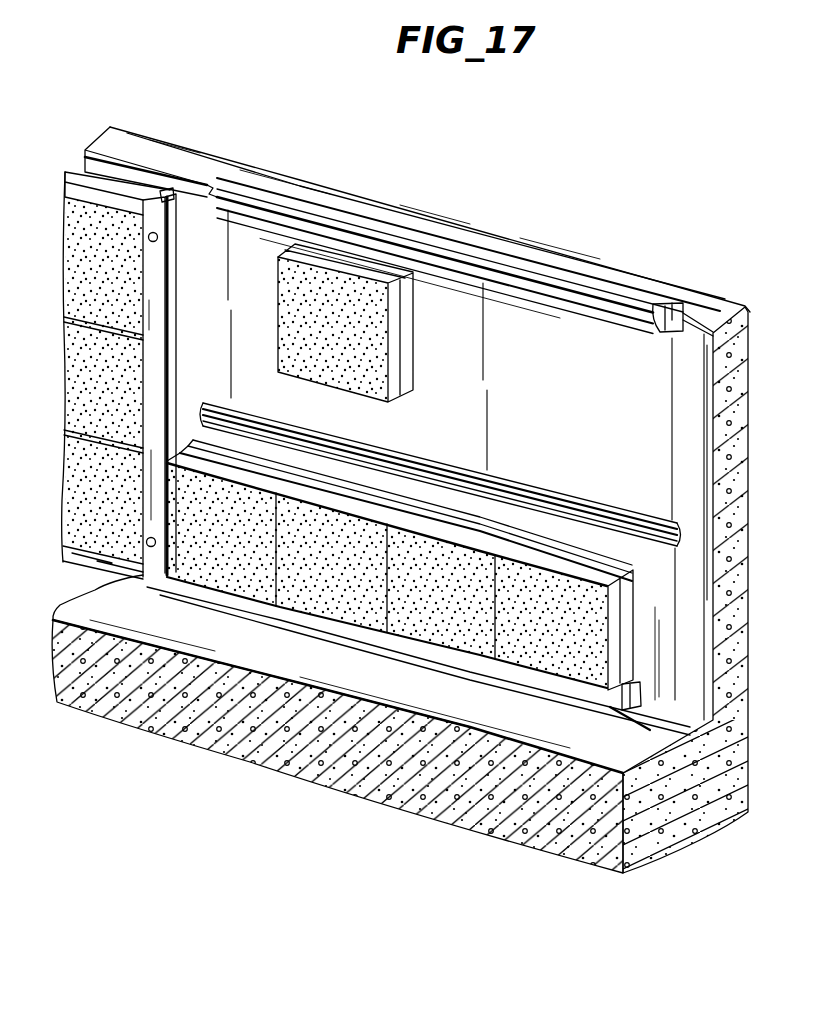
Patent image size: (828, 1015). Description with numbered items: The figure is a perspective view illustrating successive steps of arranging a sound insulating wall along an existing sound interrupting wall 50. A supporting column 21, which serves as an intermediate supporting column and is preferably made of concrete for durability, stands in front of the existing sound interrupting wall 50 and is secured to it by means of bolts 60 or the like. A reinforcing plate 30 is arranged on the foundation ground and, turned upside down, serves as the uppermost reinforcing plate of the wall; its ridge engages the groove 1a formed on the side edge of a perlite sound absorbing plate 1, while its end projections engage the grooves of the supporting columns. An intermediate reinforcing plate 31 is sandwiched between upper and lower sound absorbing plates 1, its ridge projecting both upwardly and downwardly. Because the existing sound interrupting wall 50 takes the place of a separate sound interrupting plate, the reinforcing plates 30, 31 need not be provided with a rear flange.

The perlite sound absorbing plate 1 is at (337, 293).
The groove 1a is at (503, 540).
The supporting column 21 is at (152, 513).
The reinforcing plate 30 is at (497, 260).
The intermediate reinforcing plate 31 is at (497, 480).
The existing sound interrupting wall 50 is at (657, 290).
The bolt 60 is at (175, 206).